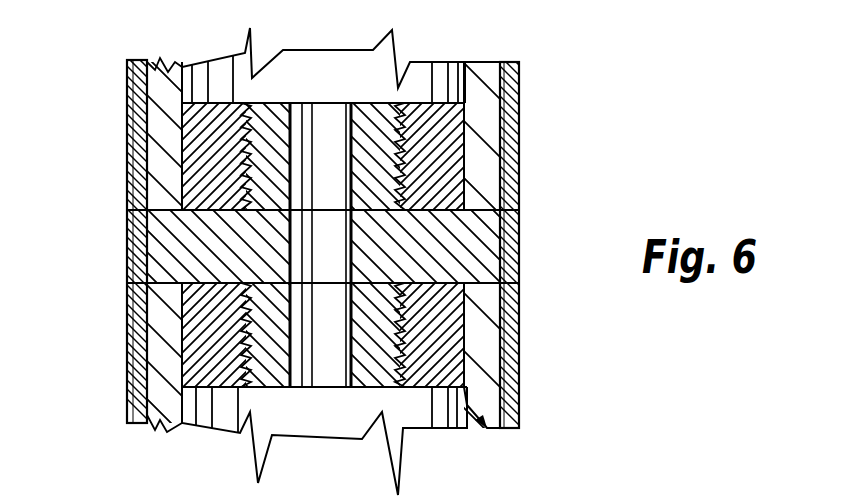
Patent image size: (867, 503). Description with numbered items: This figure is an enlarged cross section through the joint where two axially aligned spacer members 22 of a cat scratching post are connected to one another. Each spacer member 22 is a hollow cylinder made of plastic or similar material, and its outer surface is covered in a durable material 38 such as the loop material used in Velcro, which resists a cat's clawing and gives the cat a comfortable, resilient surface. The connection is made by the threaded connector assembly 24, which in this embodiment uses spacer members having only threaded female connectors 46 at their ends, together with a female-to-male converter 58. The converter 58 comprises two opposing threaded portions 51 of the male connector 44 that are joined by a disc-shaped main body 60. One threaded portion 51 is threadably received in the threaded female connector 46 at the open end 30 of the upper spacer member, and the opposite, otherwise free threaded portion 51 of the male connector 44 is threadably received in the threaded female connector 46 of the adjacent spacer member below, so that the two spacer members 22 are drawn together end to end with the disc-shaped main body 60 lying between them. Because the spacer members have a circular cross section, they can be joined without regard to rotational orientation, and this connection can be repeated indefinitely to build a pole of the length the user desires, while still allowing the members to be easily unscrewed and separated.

The spacer member 22 is at (520, 108).
The threaded connector assembly 24 is at (353, 388).
The open end 30 is at (520, 168).
The durable material 38 is at (520, 226).
The threaded male connector 44 is at (350, 153).
The threaded female connector 46 is at (460, 105).
The threaded portion 51 is at (275, 143).
The female-to-male converter 58 is at (175, 210).
The disc-shaped main body 60 is at (468, 248).